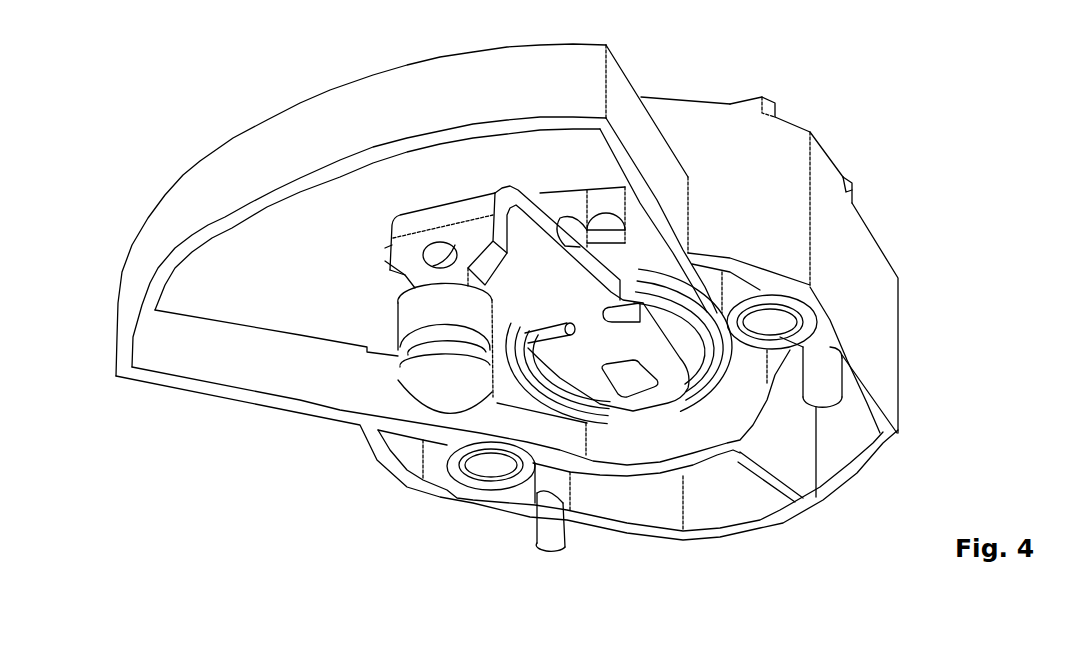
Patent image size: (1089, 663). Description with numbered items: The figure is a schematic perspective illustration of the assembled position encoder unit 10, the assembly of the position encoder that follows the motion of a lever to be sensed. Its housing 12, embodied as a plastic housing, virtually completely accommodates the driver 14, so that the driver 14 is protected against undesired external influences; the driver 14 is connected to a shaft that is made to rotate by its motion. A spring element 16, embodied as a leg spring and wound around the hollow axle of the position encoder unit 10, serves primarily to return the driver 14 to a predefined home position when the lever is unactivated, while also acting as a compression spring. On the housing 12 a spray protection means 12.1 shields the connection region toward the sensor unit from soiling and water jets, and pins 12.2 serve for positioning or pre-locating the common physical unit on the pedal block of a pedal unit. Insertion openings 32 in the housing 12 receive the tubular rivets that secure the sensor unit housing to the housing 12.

The position encoder unit 10 is at (160, 126).
The housing 12 is at (883, 327).
The spray protection means 12.1 is at (778, 104).
The pins 12.2 is at (832, 377).
The driver 14 is at (392, 246).
The spring element 16 is at (653, 403).
The insertion openings 32 is at (783, 318).